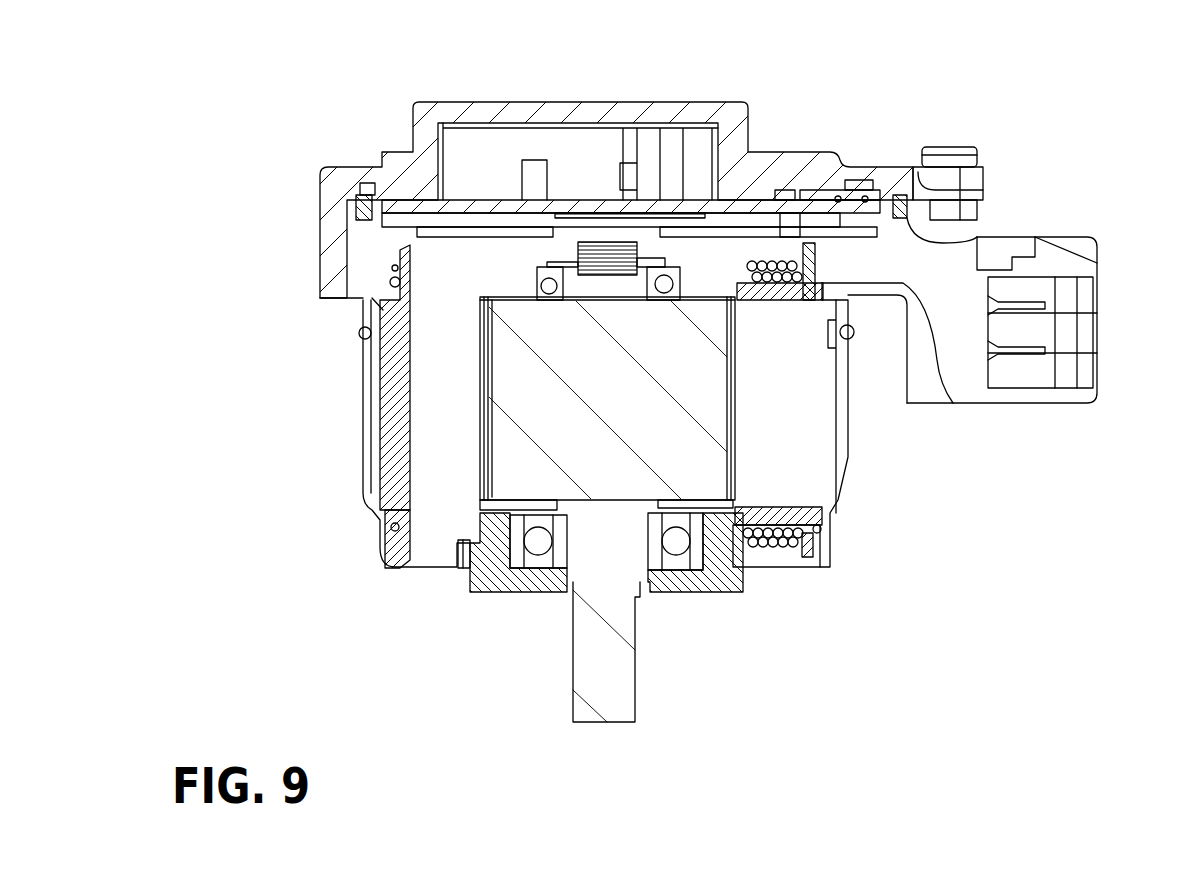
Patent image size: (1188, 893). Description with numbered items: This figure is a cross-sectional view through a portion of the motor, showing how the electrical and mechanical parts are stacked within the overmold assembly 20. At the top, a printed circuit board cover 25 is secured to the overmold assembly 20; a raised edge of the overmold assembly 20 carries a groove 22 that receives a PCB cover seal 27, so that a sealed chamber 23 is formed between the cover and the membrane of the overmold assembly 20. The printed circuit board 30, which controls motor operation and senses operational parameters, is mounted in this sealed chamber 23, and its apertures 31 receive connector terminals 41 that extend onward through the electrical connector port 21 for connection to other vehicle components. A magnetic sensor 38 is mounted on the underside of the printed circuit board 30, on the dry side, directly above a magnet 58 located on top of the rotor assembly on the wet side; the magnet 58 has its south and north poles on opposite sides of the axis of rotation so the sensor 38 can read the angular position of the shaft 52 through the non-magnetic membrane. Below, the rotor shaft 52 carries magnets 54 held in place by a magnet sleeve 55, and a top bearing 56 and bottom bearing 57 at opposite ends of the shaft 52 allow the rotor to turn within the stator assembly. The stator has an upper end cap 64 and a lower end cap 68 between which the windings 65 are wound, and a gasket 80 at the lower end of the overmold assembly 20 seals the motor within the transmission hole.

The overmold assembly 20 is at (857, 456).
The electrical connector port 21 is at (1046, 237).
The groove 22 is at (947, 240).
The sealed chamber 23 is at (732, 266).
The printed circuit board cover 25 is at (688, 100).
The PCB cover seal 27 is at (900, 195).
The printed circuit board 30 is at (788, 205).
The apertures 31 is at (865, 200).
The magnetic sensor 38 is at (592, 215).
The connector terminals 41 is at (1025, 358).
The shaft 52 is at (607, 660).
The magnets 54 is at (487, 387).
The magnet sleeve 55 is at (480, 450).
The top bearing 56 is at (558, 560).
The bottom bearing 57 is at (542, 275).
The magnet 58 is at (600, 242).
The upper end cap 64 is at (953, 404).
The windings 65 is at (781, 545).
The lower end cap 68 is at (812, 533).
The gasket 80 is at (358, 335).